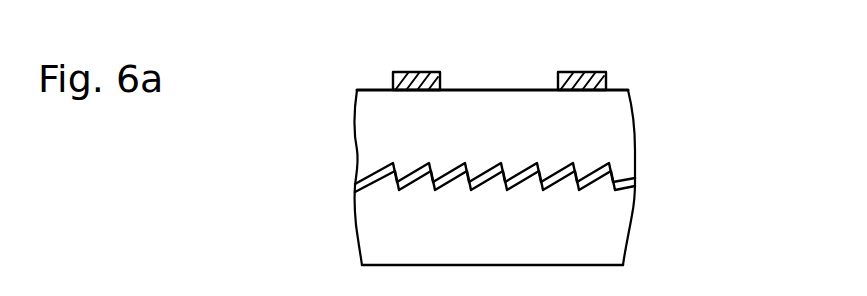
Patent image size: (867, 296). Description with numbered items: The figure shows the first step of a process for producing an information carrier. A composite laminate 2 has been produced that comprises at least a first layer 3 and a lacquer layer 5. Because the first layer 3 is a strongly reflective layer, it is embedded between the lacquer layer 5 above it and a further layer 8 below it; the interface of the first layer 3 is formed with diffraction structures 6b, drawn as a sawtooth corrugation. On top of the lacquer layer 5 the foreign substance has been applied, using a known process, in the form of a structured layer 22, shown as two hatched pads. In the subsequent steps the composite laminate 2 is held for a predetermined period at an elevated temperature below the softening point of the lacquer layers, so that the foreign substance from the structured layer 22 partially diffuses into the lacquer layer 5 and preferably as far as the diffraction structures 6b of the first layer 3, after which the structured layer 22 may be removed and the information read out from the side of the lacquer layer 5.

The composite laminate 2 is at (527, 177).
The first layer 3 is at (357, 188).
The lacquer layer 5 is at (620, 130).
The diffraction structures 6b is at (492, 203).
The further layer 8 is at (613, 237).
The structured layer 22 is at (443, 72).